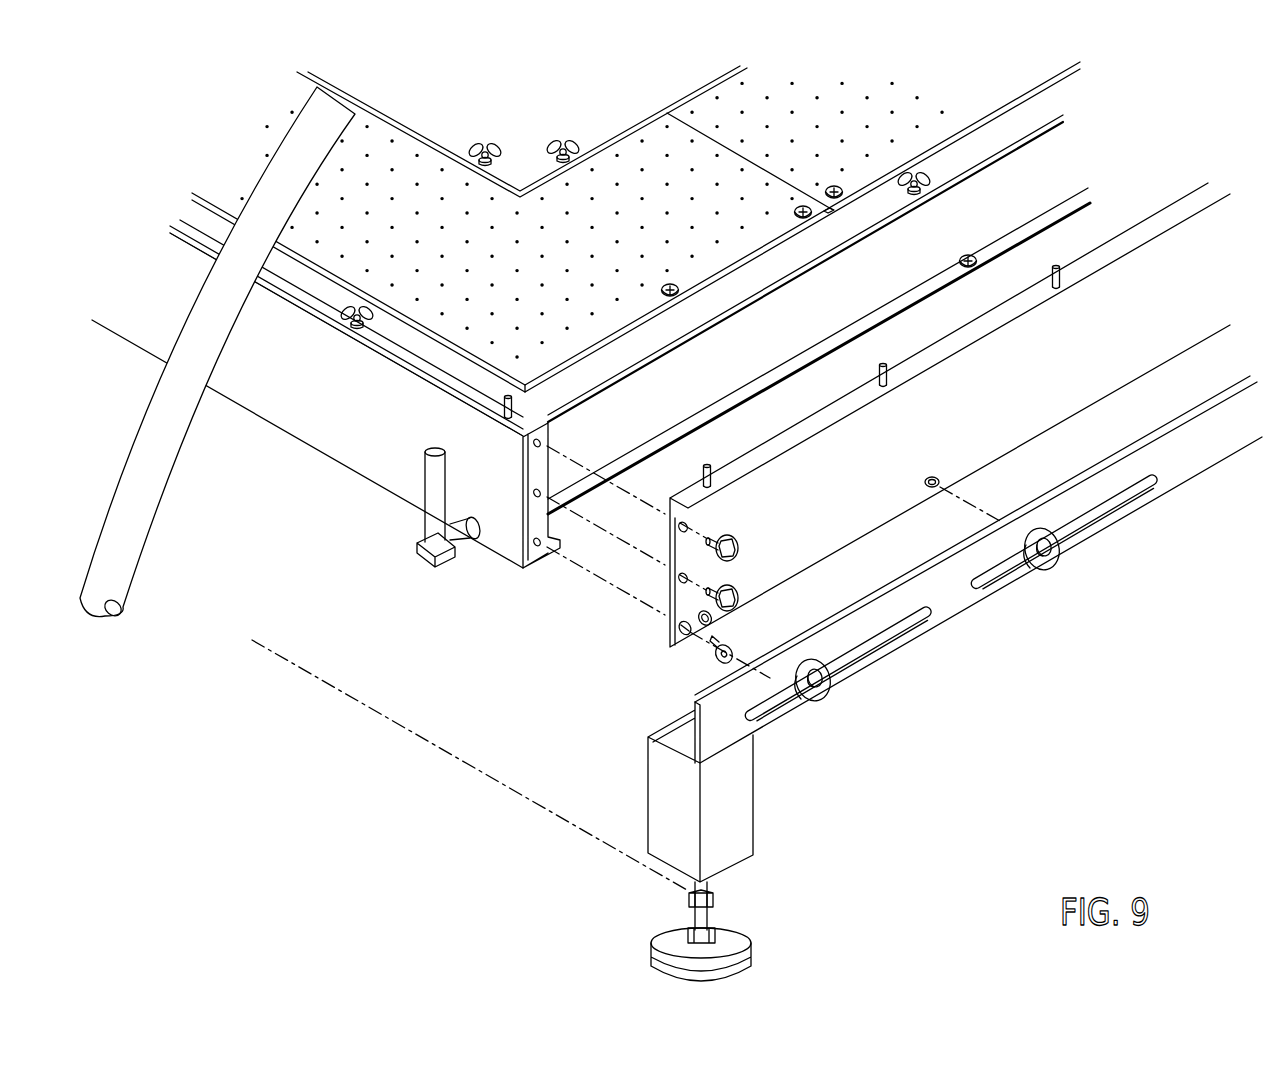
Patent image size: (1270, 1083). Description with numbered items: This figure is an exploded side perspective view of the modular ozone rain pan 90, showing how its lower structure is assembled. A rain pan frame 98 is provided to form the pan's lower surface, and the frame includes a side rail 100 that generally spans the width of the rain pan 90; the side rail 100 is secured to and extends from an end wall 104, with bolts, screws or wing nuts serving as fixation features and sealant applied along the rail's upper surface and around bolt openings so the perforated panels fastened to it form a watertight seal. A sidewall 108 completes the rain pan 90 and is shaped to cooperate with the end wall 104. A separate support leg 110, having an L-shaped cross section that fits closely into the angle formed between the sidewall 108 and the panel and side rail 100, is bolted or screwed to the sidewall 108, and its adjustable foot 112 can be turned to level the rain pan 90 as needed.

The modular ozone rain pan 90 is at (1128, 596).
The rain pan frame 98 is at (520, 584).
The side rail 100 is at (574, 474).
The end wall 104 is at (365, 415).
The sidewall 108 is at (997, 422).
The support leg 110 is at (755, 735).
The adjustable foot 112 is at (716, 920).